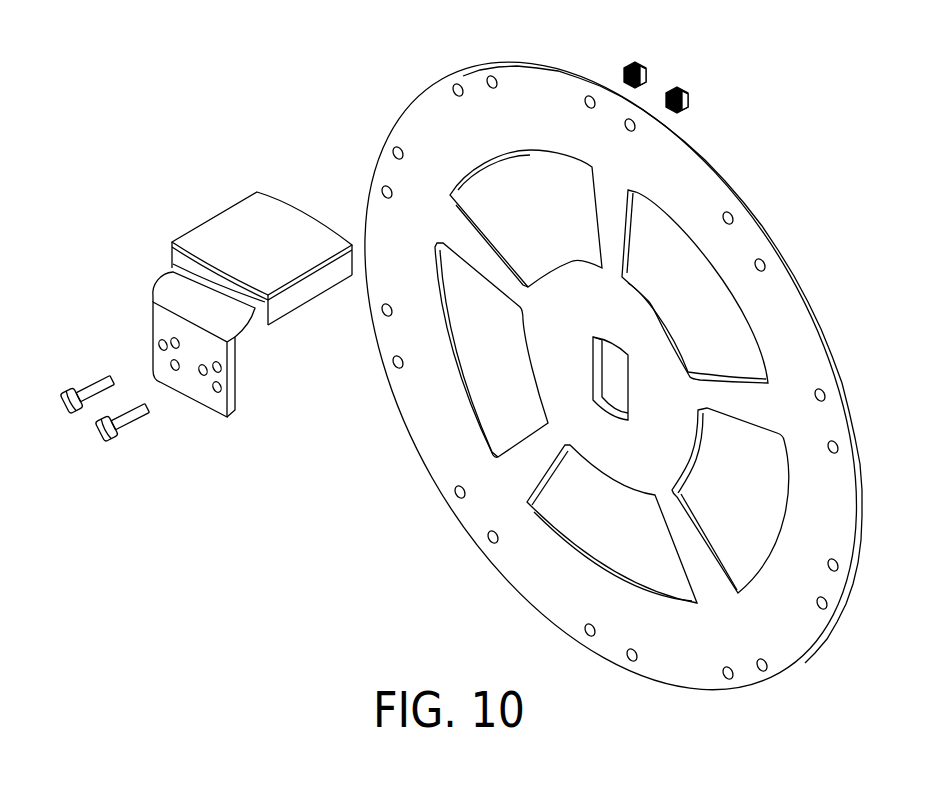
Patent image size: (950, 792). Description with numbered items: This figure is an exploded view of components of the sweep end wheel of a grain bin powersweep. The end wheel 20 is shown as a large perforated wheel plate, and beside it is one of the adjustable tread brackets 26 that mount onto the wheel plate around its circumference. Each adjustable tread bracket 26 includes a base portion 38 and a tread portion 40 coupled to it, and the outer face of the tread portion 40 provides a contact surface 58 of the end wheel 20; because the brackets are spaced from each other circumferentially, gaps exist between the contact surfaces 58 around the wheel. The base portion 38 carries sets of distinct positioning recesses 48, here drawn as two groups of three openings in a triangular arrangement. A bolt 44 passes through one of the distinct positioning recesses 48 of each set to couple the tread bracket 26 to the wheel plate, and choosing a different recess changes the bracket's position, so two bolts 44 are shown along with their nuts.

The end wheel 20 is at (395, 66).
The adjustable tread bracket 26 is at (172, 190).
The base portion 38 is at (162, 313).
The tread portion 40 is at (268, 207).
The bolt 44 is at (90, 387).
The distinct positioning recess 48 is at (158, 350).
The contact surface 58 is at (281, 251).